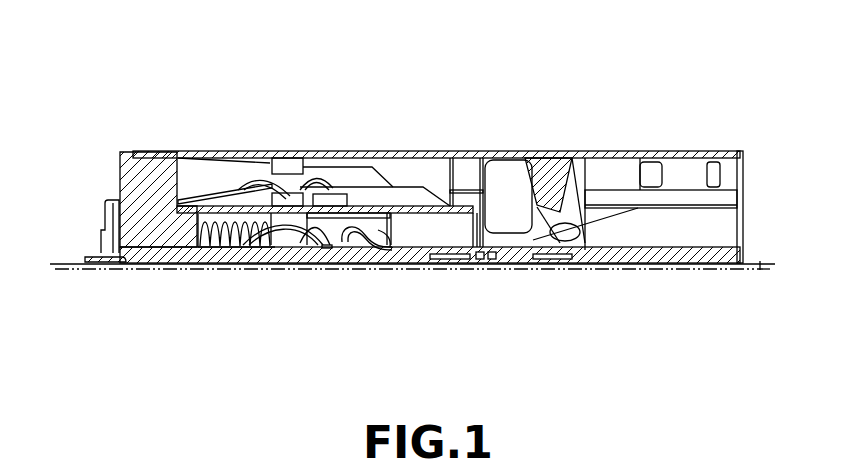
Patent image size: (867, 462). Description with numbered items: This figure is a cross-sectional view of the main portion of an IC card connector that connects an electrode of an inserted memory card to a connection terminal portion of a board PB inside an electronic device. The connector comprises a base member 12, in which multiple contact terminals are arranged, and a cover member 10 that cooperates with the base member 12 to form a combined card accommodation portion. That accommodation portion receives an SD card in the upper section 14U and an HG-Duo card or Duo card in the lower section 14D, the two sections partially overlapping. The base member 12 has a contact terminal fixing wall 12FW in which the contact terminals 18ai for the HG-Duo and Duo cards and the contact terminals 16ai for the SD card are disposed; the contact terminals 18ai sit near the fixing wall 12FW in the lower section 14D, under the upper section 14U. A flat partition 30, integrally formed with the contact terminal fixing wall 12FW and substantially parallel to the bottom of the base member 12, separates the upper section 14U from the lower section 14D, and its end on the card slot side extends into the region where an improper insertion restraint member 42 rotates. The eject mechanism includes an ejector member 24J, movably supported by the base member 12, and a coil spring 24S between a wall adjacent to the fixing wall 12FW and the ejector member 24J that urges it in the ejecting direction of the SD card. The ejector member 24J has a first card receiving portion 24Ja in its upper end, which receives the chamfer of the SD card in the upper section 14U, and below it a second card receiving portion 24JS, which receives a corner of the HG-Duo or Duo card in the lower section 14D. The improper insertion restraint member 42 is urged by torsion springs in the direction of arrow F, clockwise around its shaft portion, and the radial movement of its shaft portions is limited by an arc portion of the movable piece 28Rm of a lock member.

The cover member 10 is at (660, 150).
The base member 12 is at (756, 266).
The contact terminal fixing wall 12FW is at (141, 150).
The upper section 14U is at (432, 172).
The lower section 14D is at (458, 229).
The contact terminals 16ai is at (113, 197).
The contact terminals 18ai is at (110, 264).
The ejector member 24J is at (283, 150).
The first card receiving portion 24Ja is at (328, 150).
The second card receiving portion 24JS is at (403, 250).
The coil spring 24S is at (213, 248).
The movable piece 28Rm is at (510, 167).
The partition 30 is at (477, 150).
The improper insertion restraint member 42 is at (567, 190).
The board PB is at (49, 263).
The arrow F is at (583, 222).